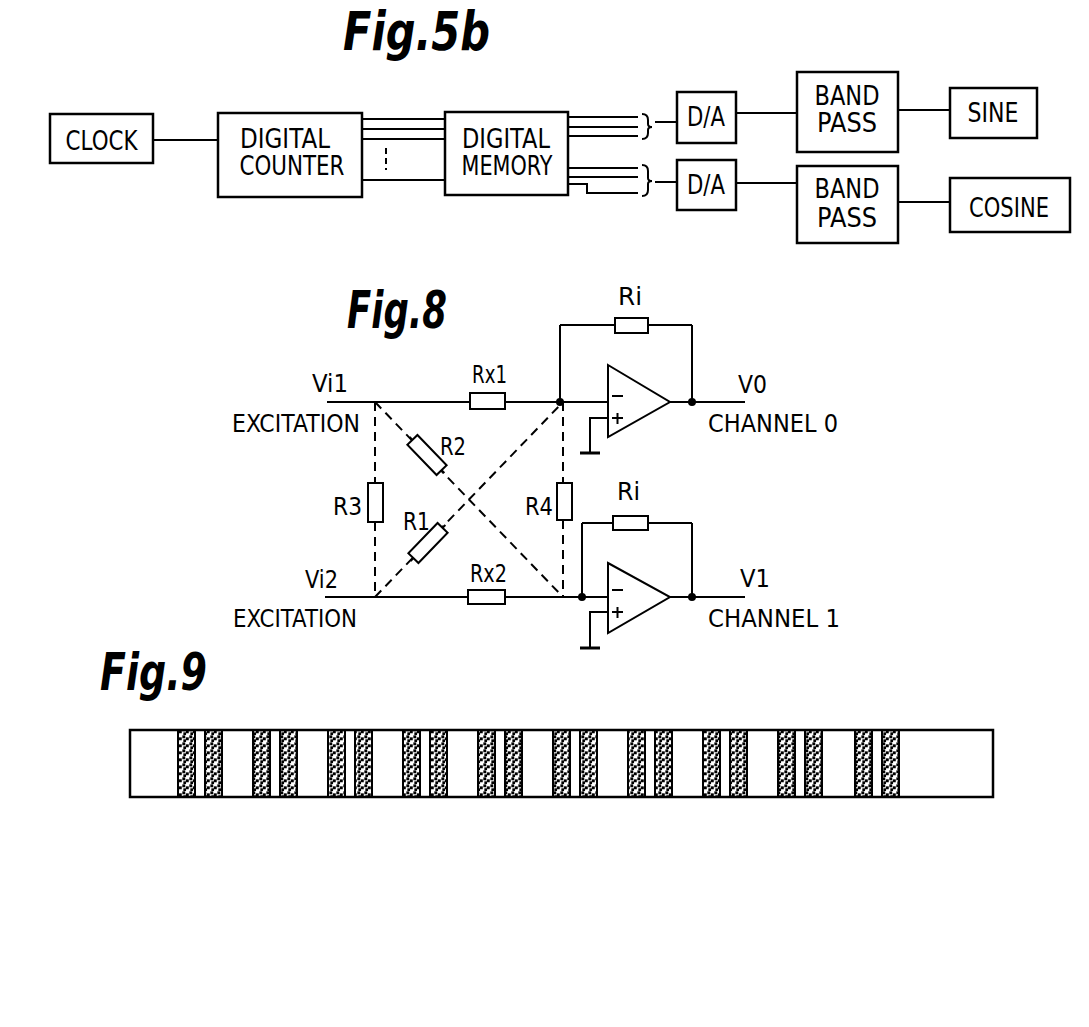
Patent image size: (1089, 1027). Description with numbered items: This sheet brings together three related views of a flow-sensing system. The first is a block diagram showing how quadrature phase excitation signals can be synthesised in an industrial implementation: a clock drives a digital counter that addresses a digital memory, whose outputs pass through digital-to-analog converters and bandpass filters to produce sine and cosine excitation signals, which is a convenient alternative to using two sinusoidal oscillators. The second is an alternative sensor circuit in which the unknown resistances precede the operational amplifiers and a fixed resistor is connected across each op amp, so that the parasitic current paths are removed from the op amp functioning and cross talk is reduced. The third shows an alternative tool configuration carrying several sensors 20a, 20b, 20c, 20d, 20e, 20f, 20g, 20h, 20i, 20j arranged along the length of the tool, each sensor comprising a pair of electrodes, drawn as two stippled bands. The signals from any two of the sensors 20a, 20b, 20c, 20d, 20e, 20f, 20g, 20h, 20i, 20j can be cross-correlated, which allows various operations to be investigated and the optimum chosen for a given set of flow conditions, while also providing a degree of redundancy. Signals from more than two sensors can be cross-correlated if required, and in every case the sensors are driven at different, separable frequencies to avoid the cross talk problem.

The sensor 20a is at (202, 822).
The sensor 20b is at (277, 822).
The sensor 20c is at (352, 822).
The sensor 20d is at (427, 822).
The sensor 20e is at (502, 822).
The sensor 20f is at (577, 822).
The sensor 20g is at (652, 822).
The sensor 20h is at (727, 822).
The sensor 20i is at (802, 822).
The sensor 20j is at (877, 822).